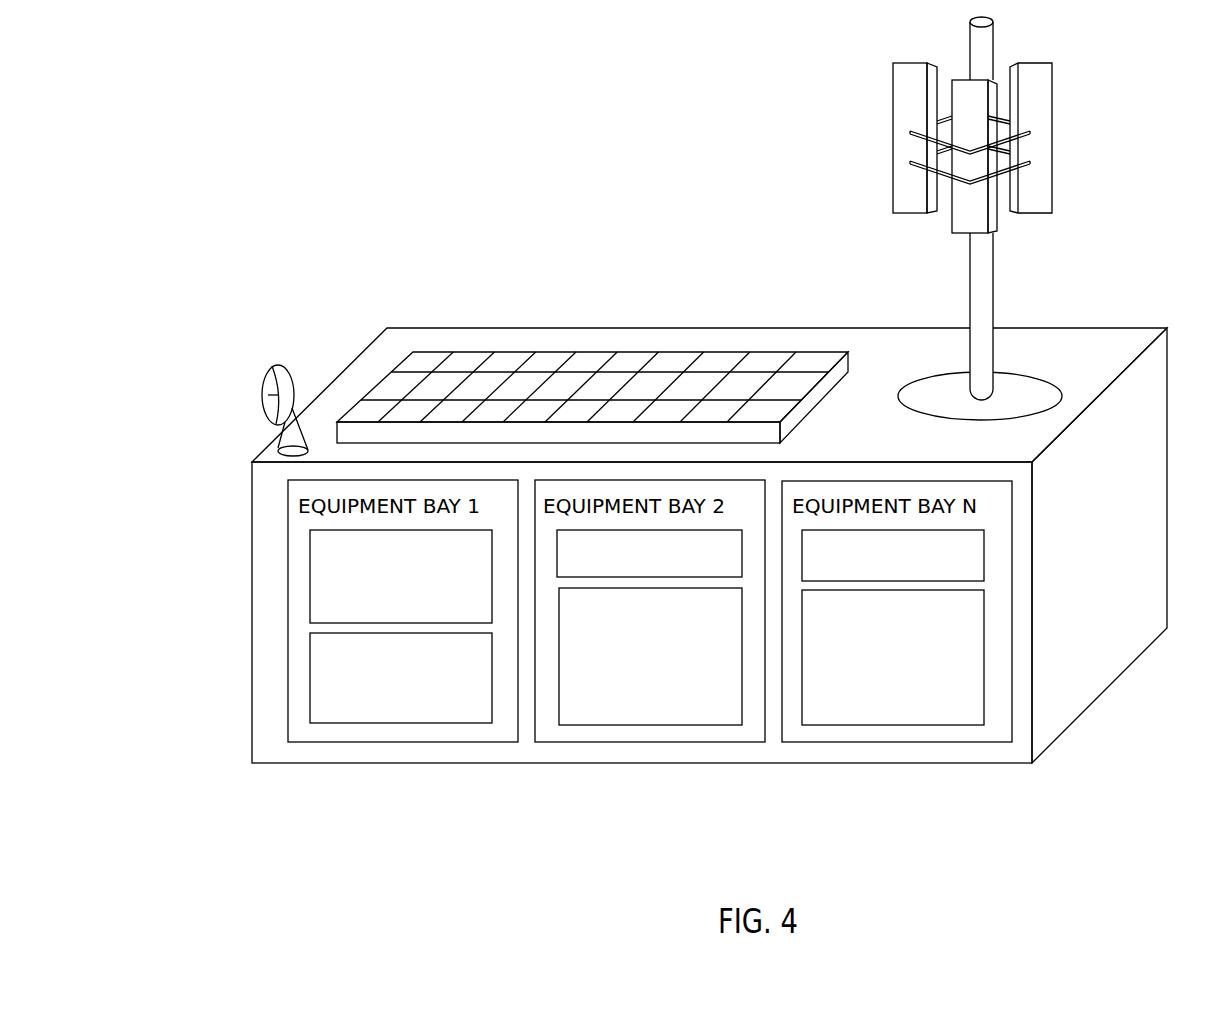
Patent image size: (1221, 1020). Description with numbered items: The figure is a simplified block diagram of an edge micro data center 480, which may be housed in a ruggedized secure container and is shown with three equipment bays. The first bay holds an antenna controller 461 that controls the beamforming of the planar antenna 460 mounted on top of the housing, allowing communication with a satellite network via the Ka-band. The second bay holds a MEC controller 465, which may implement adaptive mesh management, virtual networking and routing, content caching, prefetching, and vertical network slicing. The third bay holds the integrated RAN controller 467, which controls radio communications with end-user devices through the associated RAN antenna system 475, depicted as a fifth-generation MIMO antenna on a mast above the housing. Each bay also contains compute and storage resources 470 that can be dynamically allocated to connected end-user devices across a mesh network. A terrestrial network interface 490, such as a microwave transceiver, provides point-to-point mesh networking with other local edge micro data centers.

The planar antenna 460 is at (605, 350).
The antenna controller 461 is at (310, 575).
The MEC controller 465 is at (557, 553).
The RAN controller 467 is at (985, 557).
The compute and storage resources 470 is at (310, 668).
The RAN antenna system 475 is at (893, 70).
The edge micro data center 480 is at (380, 342).
The terrestrial network interface 490 is at (268, 365).